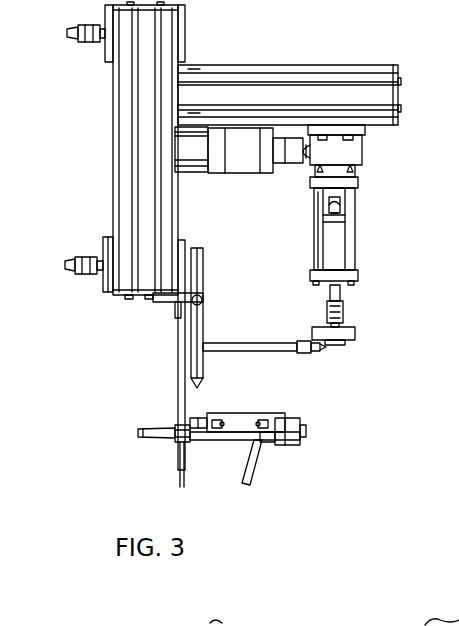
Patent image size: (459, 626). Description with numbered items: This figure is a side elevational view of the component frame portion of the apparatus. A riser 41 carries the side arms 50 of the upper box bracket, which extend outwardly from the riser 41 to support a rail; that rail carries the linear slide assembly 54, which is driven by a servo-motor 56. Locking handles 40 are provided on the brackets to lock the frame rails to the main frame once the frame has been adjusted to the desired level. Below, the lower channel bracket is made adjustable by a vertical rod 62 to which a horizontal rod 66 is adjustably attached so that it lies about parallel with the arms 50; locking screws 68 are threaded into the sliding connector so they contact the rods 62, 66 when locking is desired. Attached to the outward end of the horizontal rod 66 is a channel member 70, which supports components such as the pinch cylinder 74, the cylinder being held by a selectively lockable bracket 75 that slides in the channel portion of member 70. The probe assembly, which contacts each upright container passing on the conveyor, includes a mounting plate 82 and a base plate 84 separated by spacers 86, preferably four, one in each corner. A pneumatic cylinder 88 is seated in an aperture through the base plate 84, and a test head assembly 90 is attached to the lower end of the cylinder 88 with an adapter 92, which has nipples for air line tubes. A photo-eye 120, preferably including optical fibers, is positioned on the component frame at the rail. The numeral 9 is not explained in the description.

The locking handle 40 is at (78, 45).
The riser 41 is at (143, 173).
The side arm 50 is at (360, 66).
The linear slide assembly 54 is at (355, 160).
The servo-motor 56 is at (253, 128).
The vertical rod 62 is at (183, 368).
The horizontal rod 66 is at (160, 445).
The locking screw 68 is at (192, 440).
The channel member 70 is at (305, 440).
The pinch cylinder 74 is at (240, 413).
The selectively lockable bracket 75 is at (282, 442).
The mounting plate 82 is at (322, 182).
The base plate 84 is at (350, 276).
The spacer 86 is at (318, 245).
The pneumatic cylinder 88 is at (333, 240).
The test head assembly 90 is at (355, 332).
The adapter 92 is at (327, 312).
The photo-eye 120 is at (222, 347).
The partial numeral 9 is at (452, 396).